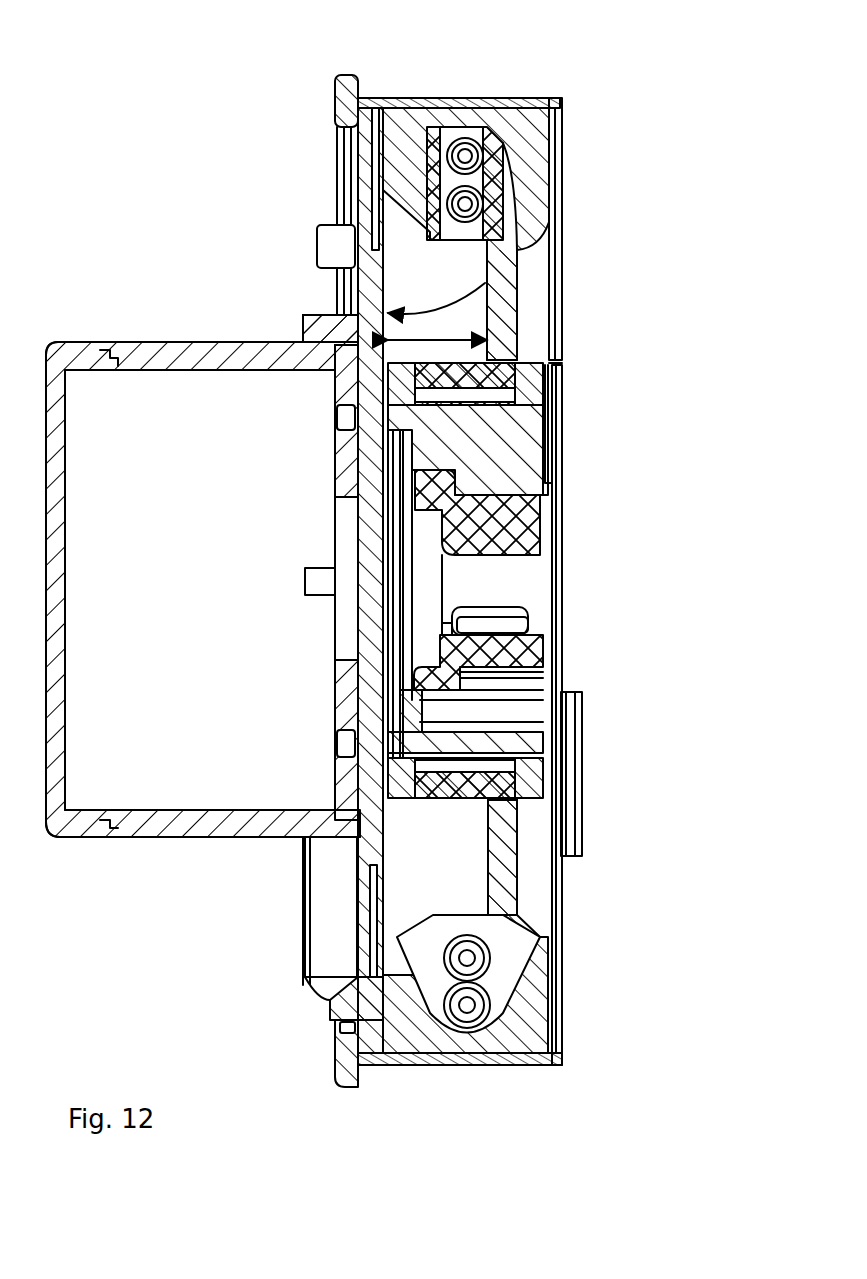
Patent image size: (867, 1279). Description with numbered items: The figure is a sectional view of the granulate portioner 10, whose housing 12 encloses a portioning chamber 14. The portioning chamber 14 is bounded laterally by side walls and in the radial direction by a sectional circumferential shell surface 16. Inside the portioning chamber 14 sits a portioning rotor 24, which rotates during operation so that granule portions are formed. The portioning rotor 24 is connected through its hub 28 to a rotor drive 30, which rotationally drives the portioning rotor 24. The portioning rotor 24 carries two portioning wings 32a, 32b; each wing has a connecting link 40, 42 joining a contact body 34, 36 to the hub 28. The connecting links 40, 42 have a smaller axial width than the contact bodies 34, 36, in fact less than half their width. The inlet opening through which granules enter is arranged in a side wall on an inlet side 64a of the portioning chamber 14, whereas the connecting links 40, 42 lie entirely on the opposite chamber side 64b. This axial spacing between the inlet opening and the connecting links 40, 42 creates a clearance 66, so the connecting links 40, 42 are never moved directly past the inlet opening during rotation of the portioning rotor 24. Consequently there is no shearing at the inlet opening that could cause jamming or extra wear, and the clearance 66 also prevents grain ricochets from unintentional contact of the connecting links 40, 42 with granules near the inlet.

The granulate portioner 10 is at (282, 88).
The housing 12 is at (365, 194).
The portioning chamber 14 is at (402, 258).
The shell surface 16 is at (528, 180).
The portioning rotor 24 is at (582, 415).
The hub 28 is at (527, 572).
The rotor drive 30 is at (202, 603).
The portioning wing 32a is at (523, 327).
The portioning wing 32b is at (530, 857).
The contact body 34 is at (512, 170).
The contact body 36 is at (513, 950).
The connecting link 40 is at (520, 297).
The connecting link 42 is at (507, 900).
The inlet side 64a is at (513, 257).
The chamber side 64b is at (540, 888).
The clearance 66 is at (410, 340).